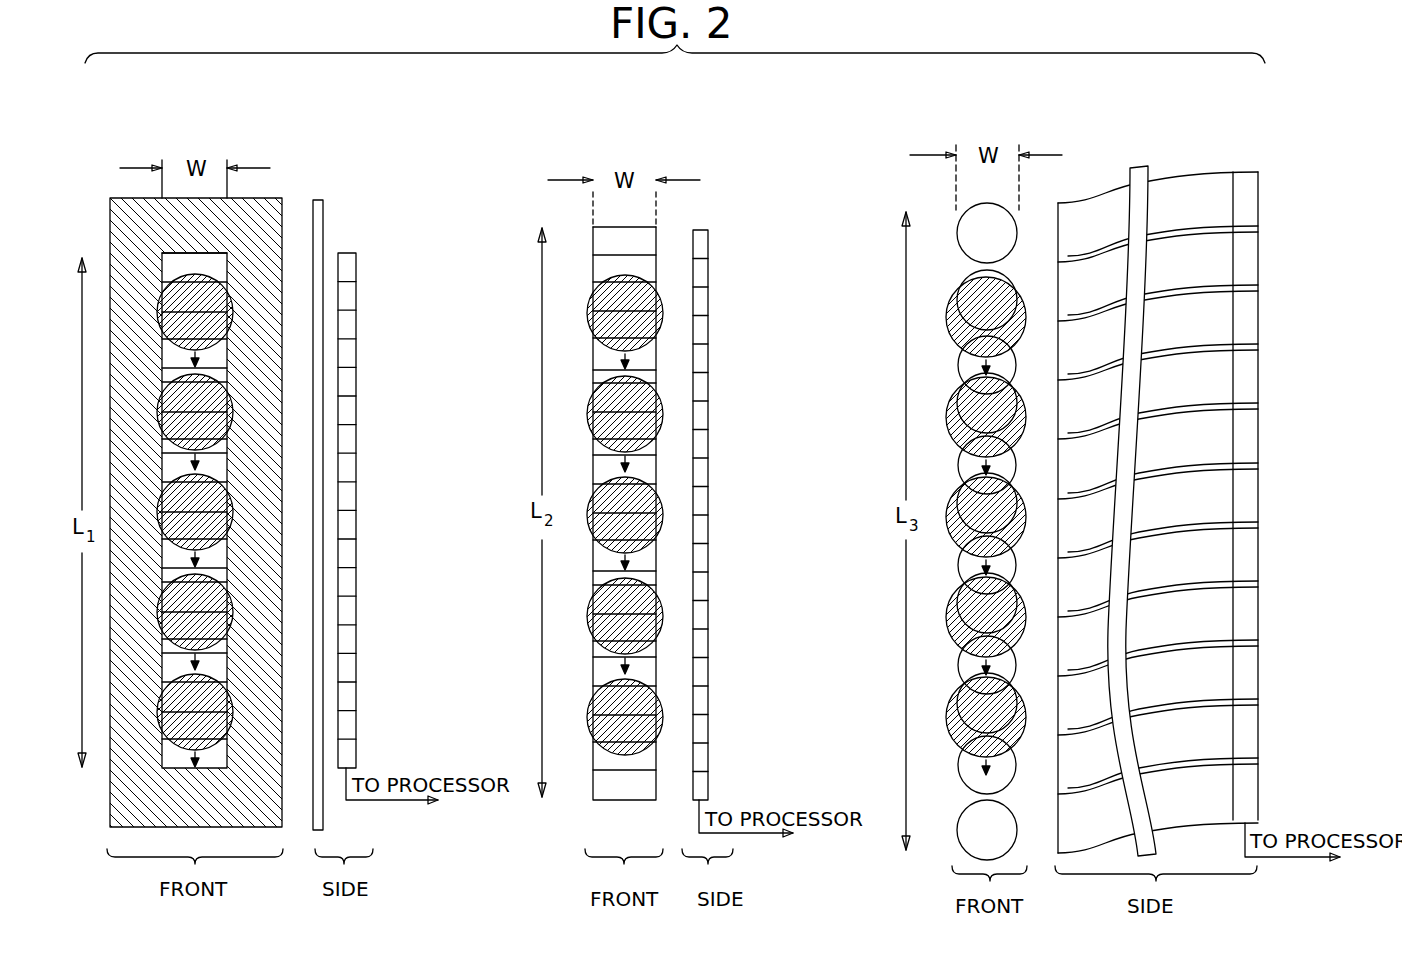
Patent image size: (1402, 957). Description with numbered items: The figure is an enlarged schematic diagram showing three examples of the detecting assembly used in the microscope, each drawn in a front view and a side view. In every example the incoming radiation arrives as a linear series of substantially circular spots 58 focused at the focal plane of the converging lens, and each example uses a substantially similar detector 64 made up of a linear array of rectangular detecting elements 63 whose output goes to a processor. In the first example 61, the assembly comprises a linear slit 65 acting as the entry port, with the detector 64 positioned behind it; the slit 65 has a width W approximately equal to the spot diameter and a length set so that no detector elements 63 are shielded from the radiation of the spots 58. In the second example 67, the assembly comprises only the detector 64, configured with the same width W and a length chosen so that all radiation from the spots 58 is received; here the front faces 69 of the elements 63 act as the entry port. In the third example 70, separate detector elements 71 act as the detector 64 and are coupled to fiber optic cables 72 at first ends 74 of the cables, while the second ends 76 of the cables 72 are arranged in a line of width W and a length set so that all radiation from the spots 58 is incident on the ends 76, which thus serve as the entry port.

The substantially circular spots 58 is at (220, 312).
The first example 61 is at (262, 150).
The rectangular detecting elements 63 is at (372, 285).
The detector 64 is at (352, 252).
The linear slit 65 is at (170, 263).
The second example 67 is at (690, 165).
The front faces 69 is at (603, 362).
The third example 70 is at (1078, 138).
The detector elements 71 is at (1257, 275).
The fiber optic cables 72 is at (1147, 157).
The first ends 74 is at (1237, 185).
The second ends 76 is at (1058, 227).